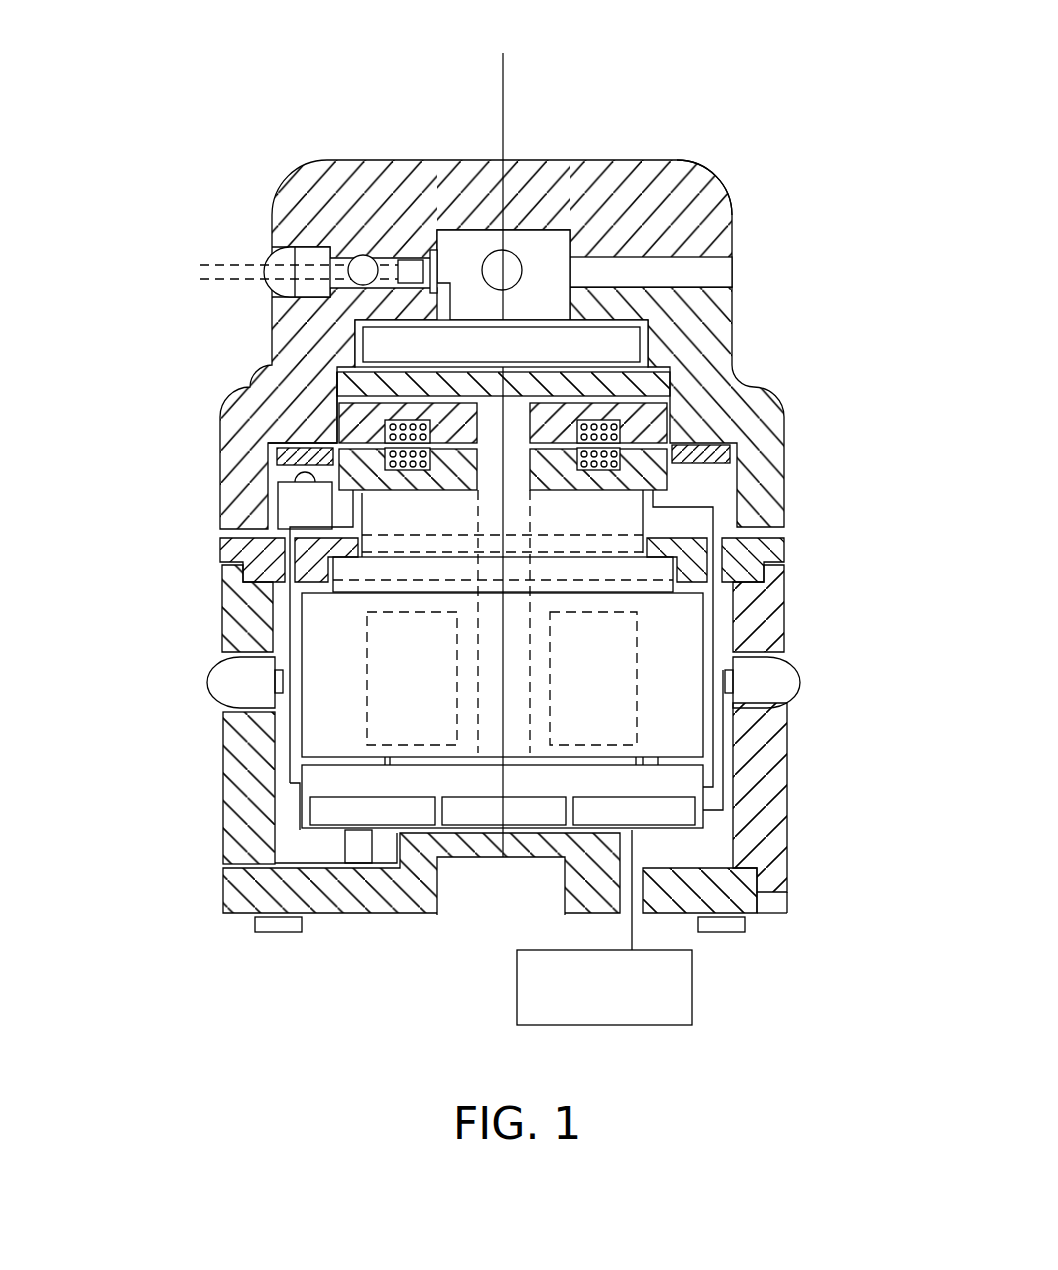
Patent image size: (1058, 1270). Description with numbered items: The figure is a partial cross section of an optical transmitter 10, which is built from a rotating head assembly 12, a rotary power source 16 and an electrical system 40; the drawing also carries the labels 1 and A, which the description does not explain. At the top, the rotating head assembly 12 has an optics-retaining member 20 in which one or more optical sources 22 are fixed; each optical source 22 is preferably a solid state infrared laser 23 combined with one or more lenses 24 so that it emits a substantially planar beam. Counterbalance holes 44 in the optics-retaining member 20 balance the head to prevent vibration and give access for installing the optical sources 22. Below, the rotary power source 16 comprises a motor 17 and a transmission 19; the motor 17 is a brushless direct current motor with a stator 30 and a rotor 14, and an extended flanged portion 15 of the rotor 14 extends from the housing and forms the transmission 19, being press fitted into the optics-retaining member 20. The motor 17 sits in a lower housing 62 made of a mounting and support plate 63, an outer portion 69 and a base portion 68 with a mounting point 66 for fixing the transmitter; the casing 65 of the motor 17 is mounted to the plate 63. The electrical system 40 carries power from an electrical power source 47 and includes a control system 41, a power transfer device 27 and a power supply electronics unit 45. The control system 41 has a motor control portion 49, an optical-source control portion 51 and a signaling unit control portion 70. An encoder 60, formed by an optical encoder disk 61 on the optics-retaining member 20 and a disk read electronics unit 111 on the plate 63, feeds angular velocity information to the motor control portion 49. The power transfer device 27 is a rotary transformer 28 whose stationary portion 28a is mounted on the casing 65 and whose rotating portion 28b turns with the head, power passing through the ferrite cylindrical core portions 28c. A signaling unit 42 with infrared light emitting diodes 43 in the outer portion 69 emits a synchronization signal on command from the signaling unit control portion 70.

The longitudinal axis 1 is at (504, 443).
The direction A is at (502, 83).
The optical transmitter 10 is at (222, 218).
The rotating head assembly 12 is at (640, 140).
The rotor 14 is at (528, 607).
The extended flanged portion 15 is at (667, 382).
The rotary power source 16 is at (290, 612).
The motor 17 is at (667, 618).
The transmission 19 is at (487, 494).
The optics-retaining member 20 is at (700, 182).
The optical source 22 is at (367, 80).
The solid state infrared laser 23 is at (410, 262).
The lens 24 is at (322, 260).
The power transfer device 27 is at (323, 432).
The rotary transformer 28 is at (640, 451).
The stationary portion 28a is at (647, 480).
The rotating portion 28b is at (652, 428).
The cylindrical core portions 28c is at (622, 432).
The stator 30 is at (375, 667).
The electrical system 40 is at (717, 830).
The control system 41 is at (270, 802).
The signaling unit 42 is at (800, 665).
The infrared light emitting diodes 43 is at (210, 690).
The counterbalance holes 44 is at (702, 273).
The power supply electronics unit 45 is at (622, 342).
The electrical power source 47 is at (692, 988).
The motor control portion 49 is at (557, 797).
The optical-source control portion 51 is at (352, 797).
The encoder 60 is at (393, 479).
The optical encoder disk 61 is at (297, 455).
The lower housing 62 is at (790, 592).
The mounting and support plate 63 is at (253, 568).
The casing 65 is at (637, 523).
The mounting point 66 is at (487, 888).
The base portion 68 is at (785, 905).
The outer portion 69 is at (740, 793).
The signaling unit control portion 70 is at (650, 797).
The disk read electronics unit 111 is at (295, 517).